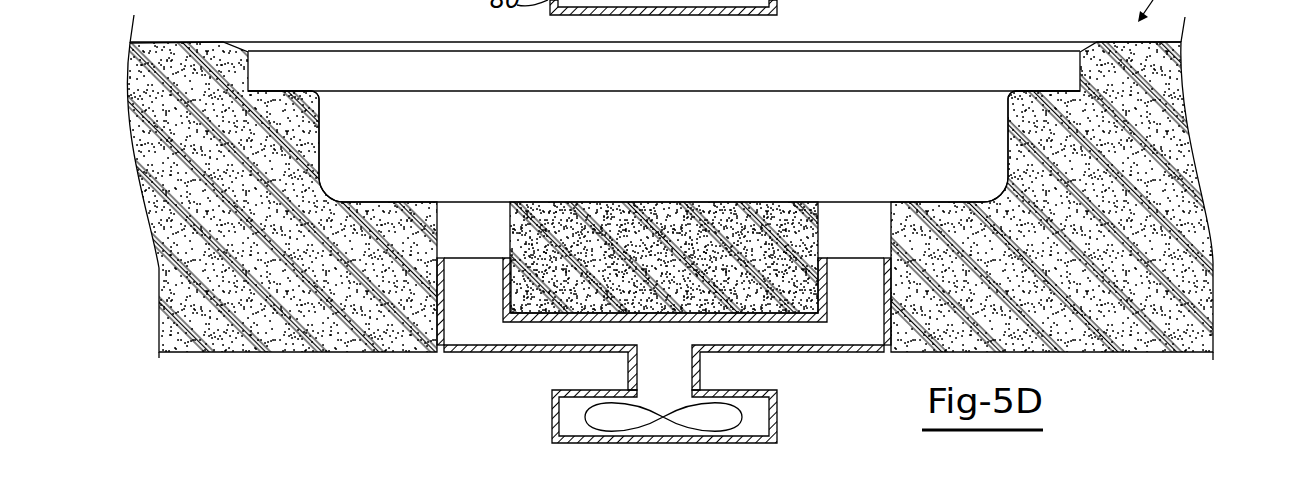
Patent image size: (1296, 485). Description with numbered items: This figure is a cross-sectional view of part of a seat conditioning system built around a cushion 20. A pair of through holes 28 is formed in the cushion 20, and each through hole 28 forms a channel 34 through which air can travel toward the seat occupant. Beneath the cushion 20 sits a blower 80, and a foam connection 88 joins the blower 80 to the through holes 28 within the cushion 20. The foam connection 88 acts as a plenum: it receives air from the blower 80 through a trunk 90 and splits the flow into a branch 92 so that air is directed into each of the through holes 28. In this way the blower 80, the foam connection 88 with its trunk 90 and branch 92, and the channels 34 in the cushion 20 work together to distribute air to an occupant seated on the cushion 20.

The cushion 20 is at (1150, 177).
The through hole 28 is at (462, 182).
The channel 34 is at (853, 223).
The blower 80 is at (555, 425).
The foam connection 88 is at (443, 318).
The trunk 90 is at (757, 335).
The branch 92 is at (852, 293).